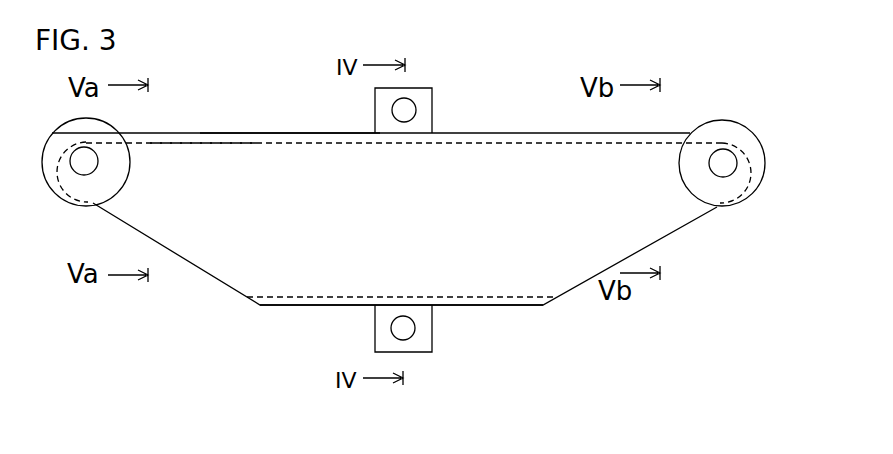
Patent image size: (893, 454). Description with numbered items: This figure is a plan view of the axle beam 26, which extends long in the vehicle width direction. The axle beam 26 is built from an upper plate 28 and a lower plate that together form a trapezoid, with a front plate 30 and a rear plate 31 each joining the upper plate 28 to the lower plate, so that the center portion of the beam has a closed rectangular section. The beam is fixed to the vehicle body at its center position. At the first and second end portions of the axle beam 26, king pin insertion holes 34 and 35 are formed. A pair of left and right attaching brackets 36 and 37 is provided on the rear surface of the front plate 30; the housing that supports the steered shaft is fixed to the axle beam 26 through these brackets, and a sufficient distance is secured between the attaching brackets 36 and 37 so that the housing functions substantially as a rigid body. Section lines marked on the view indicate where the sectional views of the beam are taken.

The axle beam 26 is at (485, 127).
The upper plate 28 is at (293, 157).
The front plate 30 is at (224, 148).
The rear plate 31 is at (309, 296).
The king pin insertion hole 34 is at (80, 167).
The king pin insertion hole 35 is at (728, 167).
The attaching bracket 36 is at (422, 92).
The attaching bracket 37 is at (423, 348).